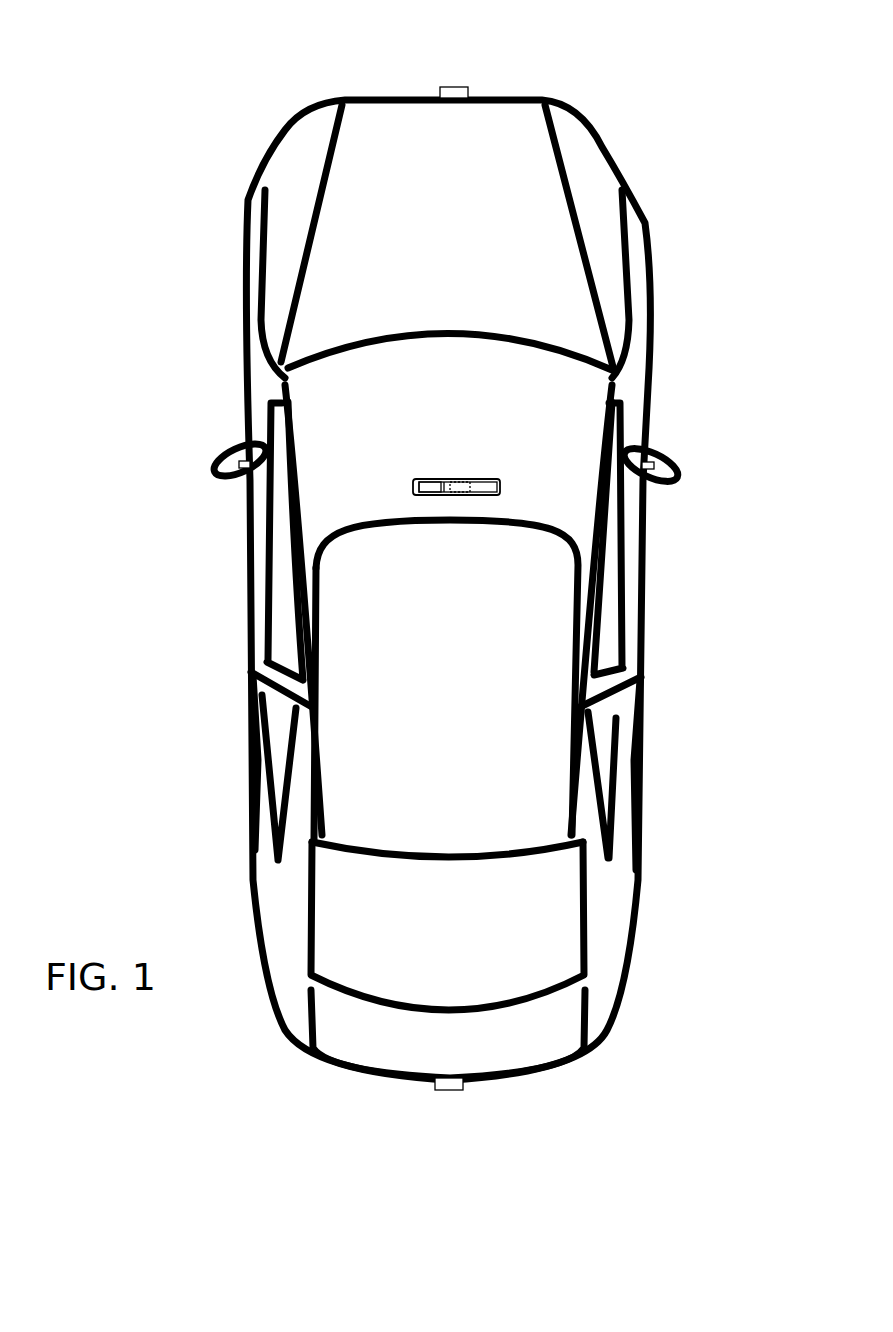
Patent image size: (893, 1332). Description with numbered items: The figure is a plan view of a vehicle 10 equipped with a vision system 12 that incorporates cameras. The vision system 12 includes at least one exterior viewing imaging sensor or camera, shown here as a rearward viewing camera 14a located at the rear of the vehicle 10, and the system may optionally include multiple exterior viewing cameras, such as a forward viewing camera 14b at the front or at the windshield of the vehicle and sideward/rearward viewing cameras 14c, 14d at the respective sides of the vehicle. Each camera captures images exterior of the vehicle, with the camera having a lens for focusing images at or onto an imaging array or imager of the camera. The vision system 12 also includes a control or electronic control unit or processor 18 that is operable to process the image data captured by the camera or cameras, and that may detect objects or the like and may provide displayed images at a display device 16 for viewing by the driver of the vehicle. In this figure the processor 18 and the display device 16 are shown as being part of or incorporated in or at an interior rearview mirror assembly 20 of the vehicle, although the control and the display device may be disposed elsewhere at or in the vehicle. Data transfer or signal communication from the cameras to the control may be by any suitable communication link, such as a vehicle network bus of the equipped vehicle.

The vehicle 10 is at (197, 190).
The vision system 12 is at (398, 1110).
The rearward viewing camera 14a is at (452, 1088).
The forward viewing camera 14b is at (460, 88).
The sideward/rearward viewing camera 14c is at (237, 458).
The sideward/rearward viewing camera 14d is at (652, 465).
The display device 16 is at (432, 483).
The electronic control unit (ECU) or processor 18 is at (453, 482).
The interior rearview mirror assembly 20 is at (498, 480).